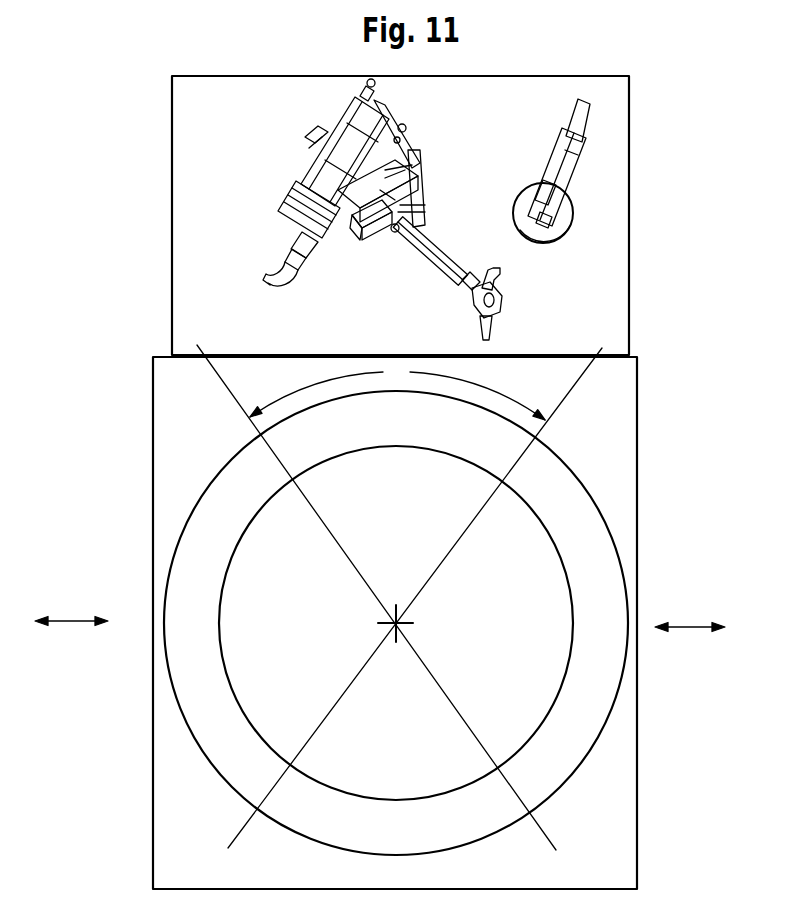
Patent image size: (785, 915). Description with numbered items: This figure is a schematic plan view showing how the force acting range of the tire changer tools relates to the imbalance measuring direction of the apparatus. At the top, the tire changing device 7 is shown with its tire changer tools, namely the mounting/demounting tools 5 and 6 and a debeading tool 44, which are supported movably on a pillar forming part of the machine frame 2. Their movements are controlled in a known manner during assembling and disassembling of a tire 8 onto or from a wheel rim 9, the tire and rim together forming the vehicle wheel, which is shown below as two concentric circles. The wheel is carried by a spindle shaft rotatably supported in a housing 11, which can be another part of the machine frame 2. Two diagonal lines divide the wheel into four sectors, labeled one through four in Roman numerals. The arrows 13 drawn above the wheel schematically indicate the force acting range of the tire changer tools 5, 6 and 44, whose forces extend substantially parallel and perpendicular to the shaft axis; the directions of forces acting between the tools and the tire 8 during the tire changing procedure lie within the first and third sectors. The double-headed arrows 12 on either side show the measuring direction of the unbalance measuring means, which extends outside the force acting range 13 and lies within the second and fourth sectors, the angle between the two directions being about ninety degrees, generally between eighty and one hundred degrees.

The machine frame 2 is at (190, 813).
The mounting/demounting tool 5 is at (297, 235).
The mounting/demounting tool 6 is at (497, 305).
The tire changing device 7 is at (196, 271).
The tire 8 is at (590, 752).
The wheel rim 9 is at (525, 745).
The housing 11 is at (208, 880).
The arrow (imbalance measuring direction) 12 is at (71, 620).
The arrows (force acting range) 13 is at (397, 391).
The debeading tool 44 is at (525, 197).